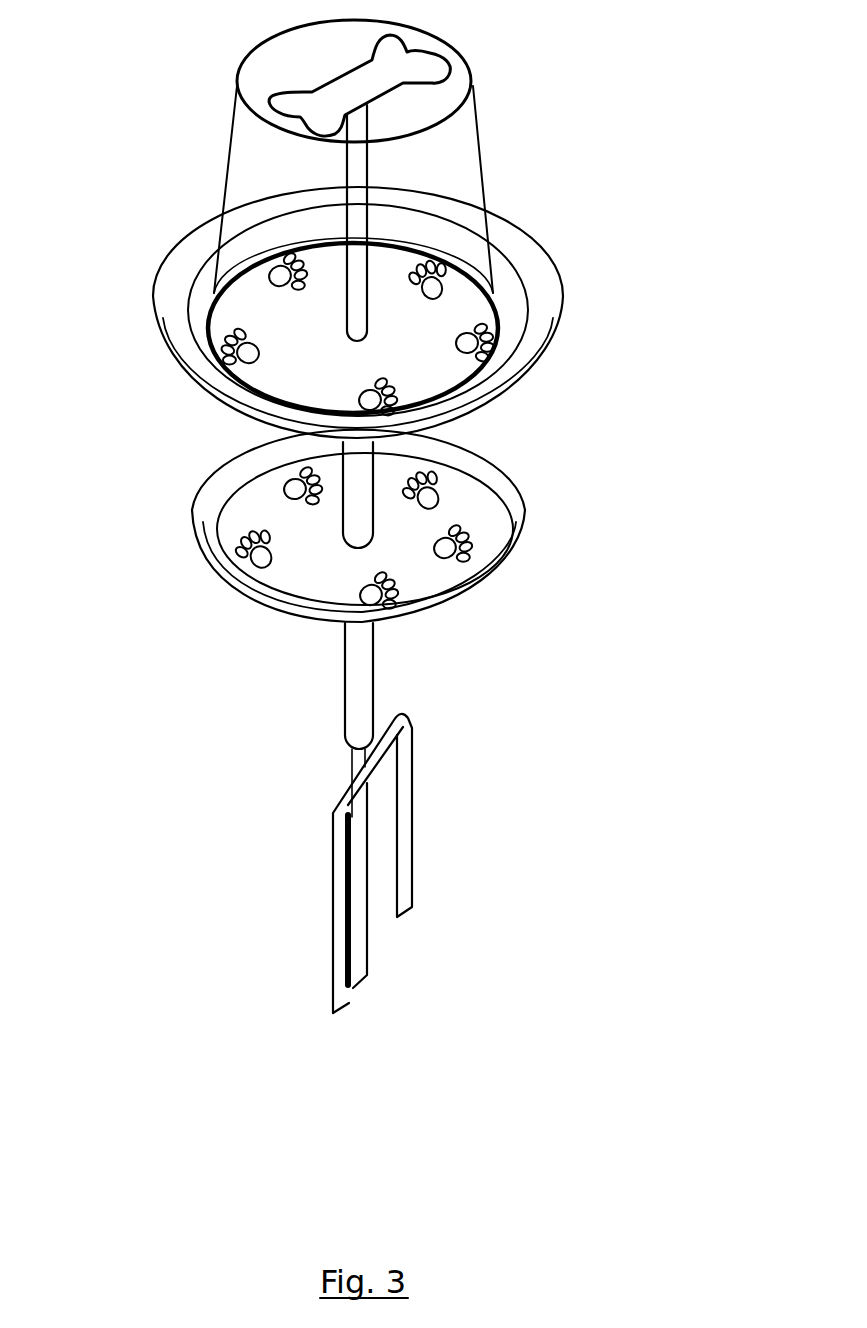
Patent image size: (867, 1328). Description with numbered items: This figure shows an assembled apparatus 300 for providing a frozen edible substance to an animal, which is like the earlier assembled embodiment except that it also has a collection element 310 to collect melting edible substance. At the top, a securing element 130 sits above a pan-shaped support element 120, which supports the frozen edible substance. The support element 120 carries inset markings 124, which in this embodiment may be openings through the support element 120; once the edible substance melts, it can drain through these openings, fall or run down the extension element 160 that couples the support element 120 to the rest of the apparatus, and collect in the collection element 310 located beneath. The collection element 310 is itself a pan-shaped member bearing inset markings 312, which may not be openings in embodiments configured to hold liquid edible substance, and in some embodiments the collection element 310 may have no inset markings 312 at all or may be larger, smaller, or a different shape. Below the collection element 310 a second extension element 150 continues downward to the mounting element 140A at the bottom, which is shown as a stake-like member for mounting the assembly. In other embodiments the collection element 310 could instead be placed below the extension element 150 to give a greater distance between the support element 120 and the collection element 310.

The assembled apparatus 300 is at (420, 658).
The collection element 310 is at (338, 545).
The inset markings 312 is at (243, 540).
The inset markings 124 is at (240, 333).
The support element 120 is at (342, 312).
The securing element 130 is at (347, 150).
The extension element 160 is at (377, 480).
The extension element 150 is at (375, 640).
The mounting element 140A is at (333, 912).